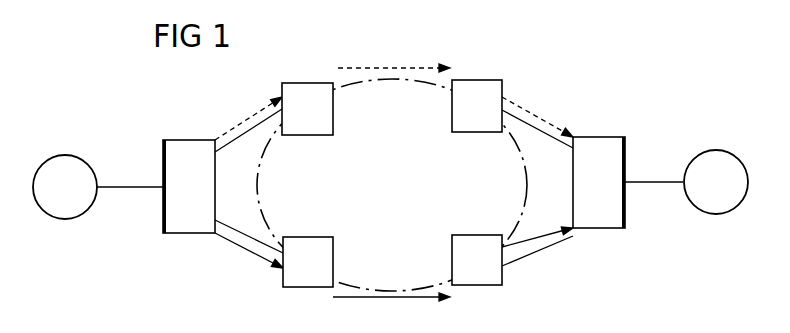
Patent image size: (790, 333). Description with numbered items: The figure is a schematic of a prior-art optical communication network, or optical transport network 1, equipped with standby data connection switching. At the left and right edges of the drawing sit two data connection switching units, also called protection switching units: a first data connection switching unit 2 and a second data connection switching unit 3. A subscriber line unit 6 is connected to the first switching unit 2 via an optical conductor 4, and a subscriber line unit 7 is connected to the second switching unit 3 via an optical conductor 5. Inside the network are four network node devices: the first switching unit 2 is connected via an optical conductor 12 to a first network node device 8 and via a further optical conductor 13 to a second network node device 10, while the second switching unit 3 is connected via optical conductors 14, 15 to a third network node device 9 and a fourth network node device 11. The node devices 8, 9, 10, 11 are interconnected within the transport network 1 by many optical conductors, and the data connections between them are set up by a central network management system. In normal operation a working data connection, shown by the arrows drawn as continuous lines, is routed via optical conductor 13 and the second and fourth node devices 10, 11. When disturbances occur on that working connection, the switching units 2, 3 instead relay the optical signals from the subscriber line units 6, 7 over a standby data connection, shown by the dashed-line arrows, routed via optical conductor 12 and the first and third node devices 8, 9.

The optical transport network 1 is at (562, 89).
The first data connection switching unit 2 is at (182, 233).
The second data connection switching unit 3 is at (602, 228).
The optical conductor 4 is at (128, 188).
The optical conductor 5 is at (652, 183).
The subscriber line unit 6 is at (62, 219).
The subscriber line unit 7 is at (717, 214).
The first network node device 8 is at (310, 83).
The third network node device 9 is at (477, 80).
The second network node device 10 is at (307, 237).
The fourth network node device 11 is at (477, 235).
The optical conductor 12 is at (250, 137).
The optical conductor 13 is at (240, 232).
The optical conductor 14 is at (535, 130).
The optical conductor 15 is at (550, 232).